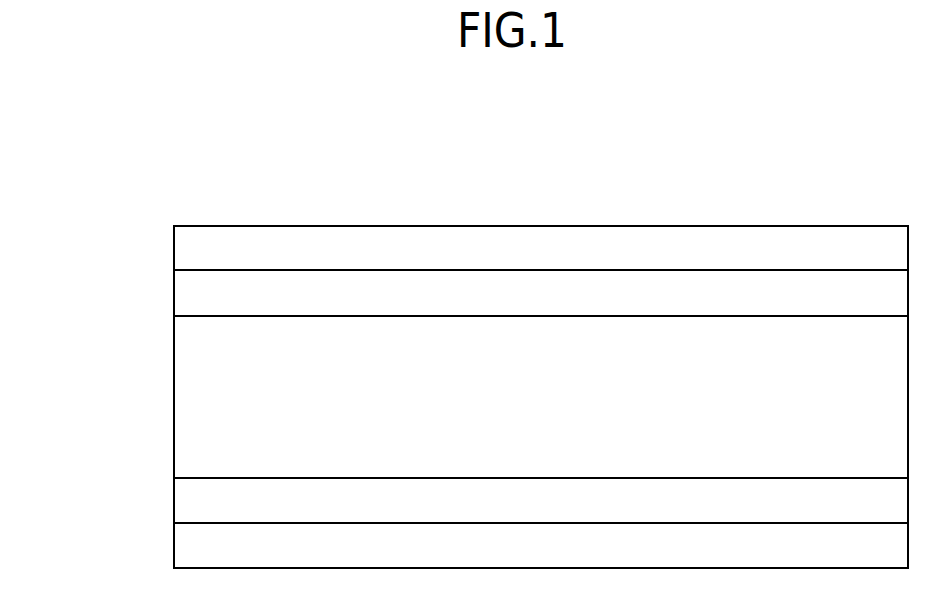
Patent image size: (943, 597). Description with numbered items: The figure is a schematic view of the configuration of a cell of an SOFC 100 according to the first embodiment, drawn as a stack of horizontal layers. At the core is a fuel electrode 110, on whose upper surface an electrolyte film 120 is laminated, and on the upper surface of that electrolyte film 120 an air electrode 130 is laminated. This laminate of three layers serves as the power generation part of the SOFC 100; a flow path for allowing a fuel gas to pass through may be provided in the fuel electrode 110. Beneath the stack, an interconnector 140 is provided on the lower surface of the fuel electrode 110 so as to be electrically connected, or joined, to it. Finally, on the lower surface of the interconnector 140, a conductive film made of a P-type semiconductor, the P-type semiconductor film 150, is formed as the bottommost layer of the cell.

The SOFC 100 is at (100, 372).
The fuel electrode 110 is at (174, 398).
The electrolyte film 120 is at (174, 295).
The air electrode 130 is at (174, 250).
The interconnector 140 is at (174, 502).
The P-type semiconductor film 150 is at (174, 548).